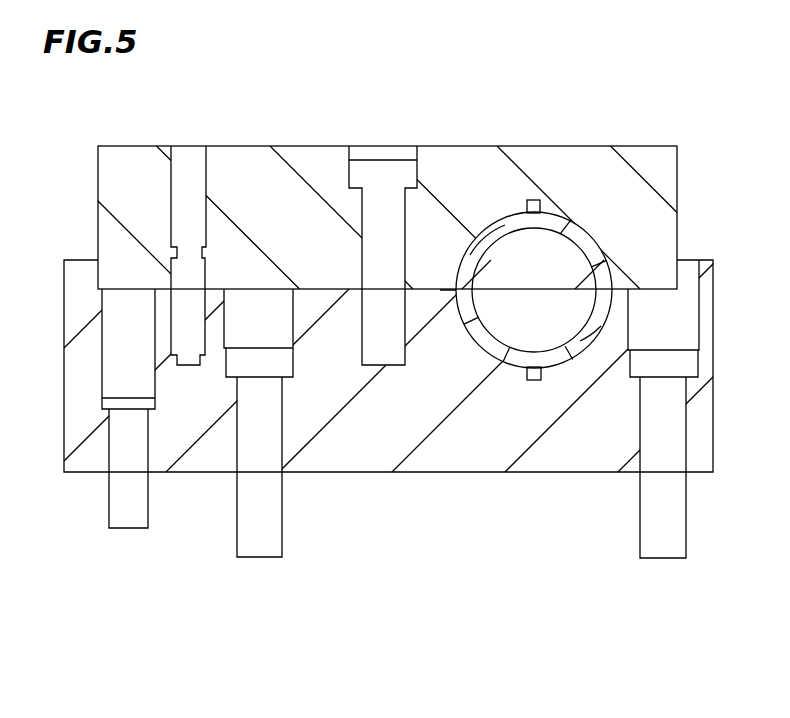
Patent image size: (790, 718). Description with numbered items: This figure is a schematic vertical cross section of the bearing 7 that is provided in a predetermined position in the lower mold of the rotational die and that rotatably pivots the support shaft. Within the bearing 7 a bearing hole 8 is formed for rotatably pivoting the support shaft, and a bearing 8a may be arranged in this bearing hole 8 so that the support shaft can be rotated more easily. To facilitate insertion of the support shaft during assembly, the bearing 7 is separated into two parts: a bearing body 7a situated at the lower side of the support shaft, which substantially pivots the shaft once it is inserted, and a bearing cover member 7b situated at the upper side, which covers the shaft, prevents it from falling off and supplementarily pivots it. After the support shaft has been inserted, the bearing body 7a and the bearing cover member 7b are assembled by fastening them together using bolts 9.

The bearing 7 is at (603, 107).
The bearing body 7a is at (380, 462).
The bearing cover member 7b is at (245, 163).
The bearing hole 8 is at (533, 335).
The bearing 8a is at (550, 357).
The bolts 9 is at (380, 175).